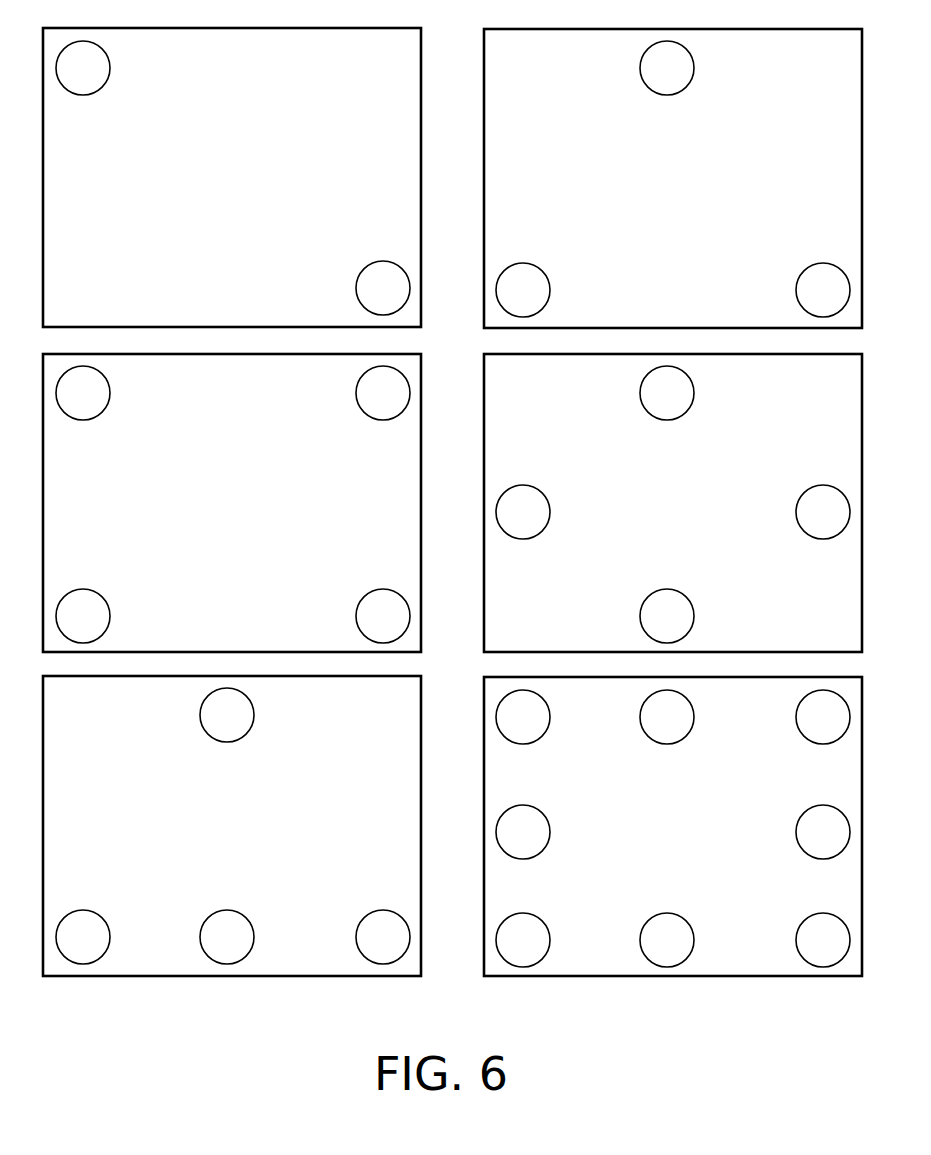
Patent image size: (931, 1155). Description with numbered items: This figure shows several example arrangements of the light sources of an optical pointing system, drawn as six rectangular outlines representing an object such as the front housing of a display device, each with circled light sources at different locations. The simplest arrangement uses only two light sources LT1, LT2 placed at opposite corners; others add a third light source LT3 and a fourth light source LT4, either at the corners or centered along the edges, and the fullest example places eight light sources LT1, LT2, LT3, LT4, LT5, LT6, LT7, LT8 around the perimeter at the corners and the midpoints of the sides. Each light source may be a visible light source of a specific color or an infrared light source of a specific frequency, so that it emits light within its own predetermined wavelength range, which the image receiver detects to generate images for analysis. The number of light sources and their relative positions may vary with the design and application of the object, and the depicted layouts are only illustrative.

The light source LT1 is at (375, 392).
The light source LT2 is at (303, 612).
The light source LT3 is at (525, 615).
The light source LT4 is at (525, 666).
The light source LT5 is at (823, 940).
The light source LT6 is at (823, 832).
The light source LT7 is at (823, 717).
The light source LT8 is at (667, 717).